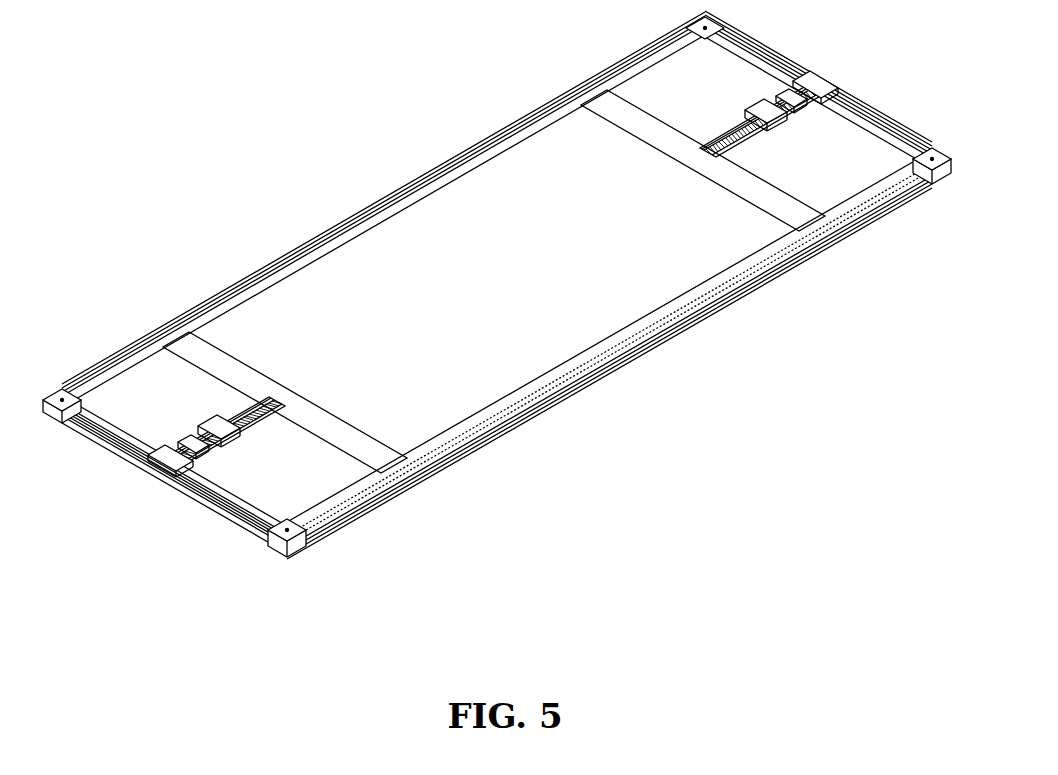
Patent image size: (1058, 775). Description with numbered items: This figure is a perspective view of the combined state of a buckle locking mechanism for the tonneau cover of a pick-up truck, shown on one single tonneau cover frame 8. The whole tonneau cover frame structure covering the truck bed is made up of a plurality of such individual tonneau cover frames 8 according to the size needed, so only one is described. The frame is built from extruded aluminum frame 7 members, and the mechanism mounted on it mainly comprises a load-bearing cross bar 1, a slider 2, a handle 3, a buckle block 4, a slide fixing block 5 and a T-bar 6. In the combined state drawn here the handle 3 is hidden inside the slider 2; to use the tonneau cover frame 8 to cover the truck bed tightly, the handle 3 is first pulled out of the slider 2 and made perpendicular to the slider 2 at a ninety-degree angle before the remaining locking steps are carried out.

The load-bearing cross bar 1 is at (773, 197).
The slider 2 is at (737, 150).
The handle 3 is at (733, 127).
The buckle block 4 is at (773, 103).
The slide fixing block 5 is at (807, 110).
The T-bar 6 is at (830, 100).
The extruded aluminum frame 7 is at (775, 52).
The tonneau cover frame 8 is at (383, 183).